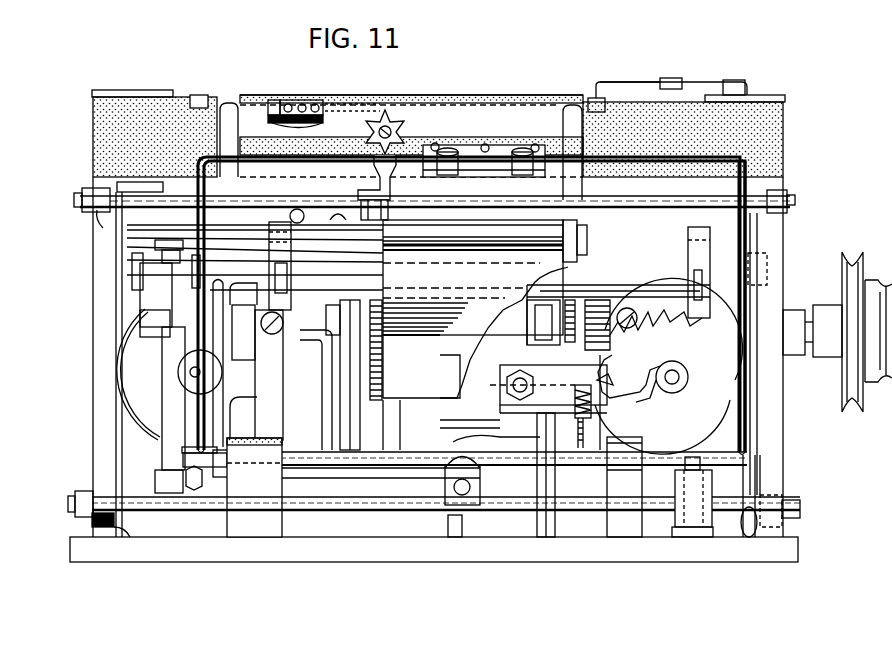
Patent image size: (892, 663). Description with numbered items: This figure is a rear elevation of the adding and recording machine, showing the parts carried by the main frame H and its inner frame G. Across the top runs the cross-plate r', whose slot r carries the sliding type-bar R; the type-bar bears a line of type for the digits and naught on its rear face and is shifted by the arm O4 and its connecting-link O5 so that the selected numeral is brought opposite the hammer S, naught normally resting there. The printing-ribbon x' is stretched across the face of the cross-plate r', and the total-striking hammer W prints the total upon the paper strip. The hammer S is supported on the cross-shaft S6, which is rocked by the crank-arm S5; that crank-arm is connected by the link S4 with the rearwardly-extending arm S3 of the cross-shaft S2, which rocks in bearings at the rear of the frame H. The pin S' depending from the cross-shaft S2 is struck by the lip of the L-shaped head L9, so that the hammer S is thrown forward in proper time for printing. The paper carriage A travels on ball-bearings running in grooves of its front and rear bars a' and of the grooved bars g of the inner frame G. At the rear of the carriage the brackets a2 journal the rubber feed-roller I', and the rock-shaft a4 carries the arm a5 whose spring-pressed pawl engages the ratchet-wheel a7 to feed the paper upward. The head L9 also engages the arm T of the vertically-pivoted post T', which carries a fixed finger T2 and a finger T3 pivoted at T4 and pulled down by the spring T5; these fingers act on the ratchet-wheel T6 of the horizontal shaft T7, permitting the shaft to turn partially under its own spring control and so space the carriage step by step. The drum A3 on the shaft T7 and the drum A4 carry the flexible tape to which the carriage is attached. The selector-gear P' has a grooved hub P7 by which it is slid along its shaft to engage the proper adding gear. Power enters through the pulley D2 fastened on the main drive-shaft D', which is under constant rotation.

The cross-plate r' is at (277, 93).
The sliding type-bar R is at (300, 100).
The slot r is at (411, 86).
The connecting-link O5 is at (622, 82).
The arm O4 is at (704, 82).
The printing-ribbon x' is at (450, 145).
The hammer S is at (371, 165).
The total-striking hammer W is at (483, 150).
The cross-shaft S6 is at (465, 171).
The crank-arm S5 is at (787, 190).
The arm a5 is at (308, 208).
The rock-shaft a4 is at (340, 208).
The main frame H is at (93, 270).
The pulley D2 is at (852, 252).
The grooved bars g is at (255, 241).
The feed-roller I' is at (478, 310).
The bars a' is at (620, 277).
The carriage A is at (618, 304).
The brackets a2 is at (288, 278).
The ratchet-wheel a7 is at (294, 258).
The main shaft D' is at (812, 319).
The inner frame G is at (648, 423).
The hub P7 is at (312, 352).
The selector-gear P' is at (350, 375).
The vertically-pivoted post T' is at (529, 322).
The pivoted finger T3 is at (568, 324).
The ratchet-wheel T6 is at (630, 333).
The horizontal shaft T7 is at (680, 368).
The pivot T4 is at (506, 386).
The fixed finger T2 is at (613, 384).
The arm T is at (540, 391).
The spring T5 is at (594, 406).
The drum A3 is at (702, 442).
The drum A4 is at (138, 380).
The link S4 is at (750, 440).
The cross-shaft S2 is at (623, 500).
The arm S3 is at (742, 522).
The L-shaped head L9 is at (448, 524).
The pin S' is at (487, 499).